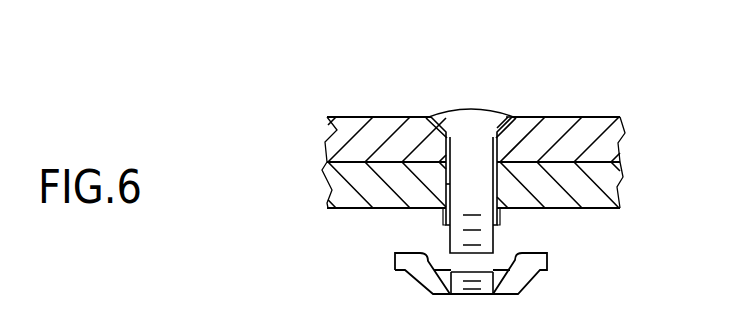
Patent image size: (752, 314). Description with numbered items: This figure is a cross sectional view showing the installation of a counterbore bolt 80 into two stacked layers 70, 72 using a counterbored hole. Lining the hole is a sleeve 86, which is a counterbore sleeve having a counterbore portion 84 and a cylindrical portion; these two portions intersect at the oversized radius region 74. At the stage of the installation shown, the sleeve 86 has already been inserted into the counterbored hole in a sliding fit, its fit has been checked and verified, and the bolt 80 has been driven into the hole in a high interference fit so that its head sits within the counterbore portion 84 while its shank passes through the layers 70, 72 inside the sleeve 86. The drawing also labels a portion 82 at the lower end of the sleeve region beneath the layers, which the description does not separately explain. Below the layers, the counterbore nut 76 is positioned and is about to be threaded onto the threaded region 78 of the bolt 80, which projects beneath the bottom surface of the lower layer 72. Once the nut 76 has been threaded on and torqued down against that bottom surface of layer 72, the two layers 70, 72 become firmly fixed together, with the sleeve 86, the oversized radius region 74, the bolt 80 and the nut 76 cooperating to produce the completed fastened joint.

The layer 70 is at (337, 141).
The layer 72 is at (341, 188).
The oversized radius region 74 is at (443, 140).
The counterbore nut 76 is at (420, 283).
The threaded region 78 is at (452, 230).
The counterbore bolt 80 is at (465, 120).
The rivet shank 82 is at (498, 222).
The counterbore portion 84 is at (513, 128).
The sleeve 86 is at (446, 184).